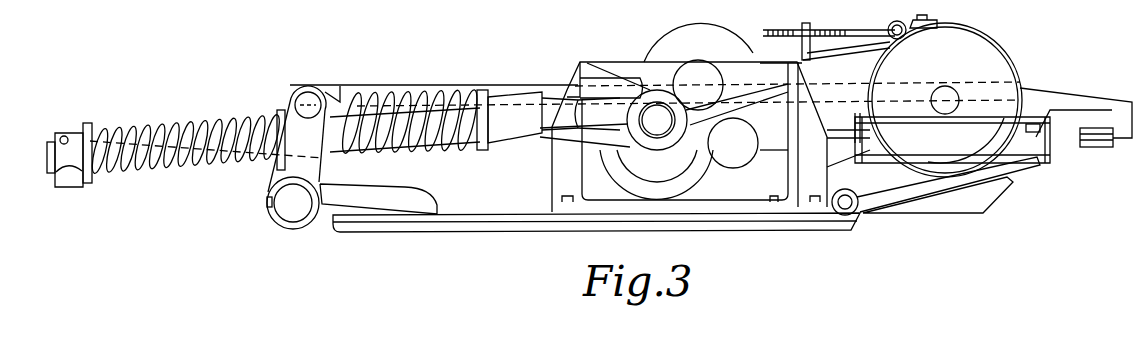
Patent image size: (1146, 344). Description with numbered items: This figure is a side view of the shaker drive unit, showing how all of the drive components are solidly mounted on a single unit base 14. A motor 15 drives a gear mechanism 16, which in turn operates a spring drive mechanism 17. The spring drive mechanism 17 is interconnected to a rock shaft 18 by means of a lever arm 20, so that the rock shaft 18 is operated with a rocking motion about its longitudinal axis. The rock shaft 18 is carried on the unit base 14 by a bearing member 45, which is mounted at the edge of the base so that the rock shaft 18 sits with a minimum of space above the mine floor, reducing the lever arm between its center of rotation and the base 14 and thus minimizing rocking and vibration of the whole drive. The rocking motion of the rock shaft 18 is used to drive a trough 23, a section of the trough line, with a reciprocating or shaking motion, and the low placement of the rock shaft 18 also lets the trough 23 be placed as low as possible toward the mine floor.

The unit base 14 is at (797, 230).
The motor 15 is at (990, 48).
The gear mechanism 16 is at (618, 62).
The spring drive mechanism 17 is at (393, 95).
The rock shaft 18 is at (297, 213).
The lever arm 20 is at (273, 181).
The trough 23 is at (437, 84).
The bearing member 45 is at (378, 197).